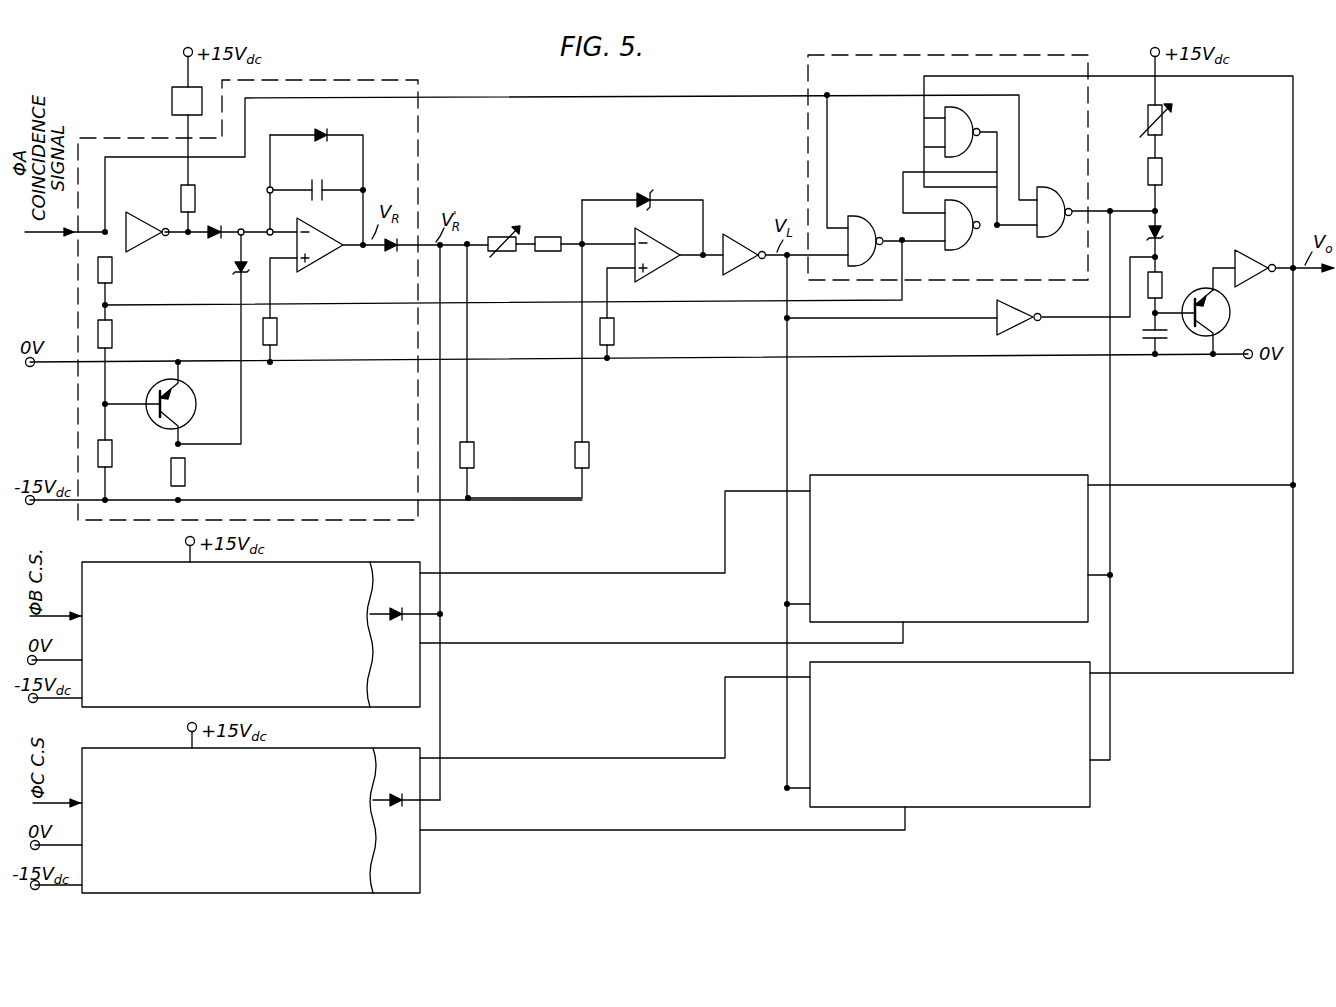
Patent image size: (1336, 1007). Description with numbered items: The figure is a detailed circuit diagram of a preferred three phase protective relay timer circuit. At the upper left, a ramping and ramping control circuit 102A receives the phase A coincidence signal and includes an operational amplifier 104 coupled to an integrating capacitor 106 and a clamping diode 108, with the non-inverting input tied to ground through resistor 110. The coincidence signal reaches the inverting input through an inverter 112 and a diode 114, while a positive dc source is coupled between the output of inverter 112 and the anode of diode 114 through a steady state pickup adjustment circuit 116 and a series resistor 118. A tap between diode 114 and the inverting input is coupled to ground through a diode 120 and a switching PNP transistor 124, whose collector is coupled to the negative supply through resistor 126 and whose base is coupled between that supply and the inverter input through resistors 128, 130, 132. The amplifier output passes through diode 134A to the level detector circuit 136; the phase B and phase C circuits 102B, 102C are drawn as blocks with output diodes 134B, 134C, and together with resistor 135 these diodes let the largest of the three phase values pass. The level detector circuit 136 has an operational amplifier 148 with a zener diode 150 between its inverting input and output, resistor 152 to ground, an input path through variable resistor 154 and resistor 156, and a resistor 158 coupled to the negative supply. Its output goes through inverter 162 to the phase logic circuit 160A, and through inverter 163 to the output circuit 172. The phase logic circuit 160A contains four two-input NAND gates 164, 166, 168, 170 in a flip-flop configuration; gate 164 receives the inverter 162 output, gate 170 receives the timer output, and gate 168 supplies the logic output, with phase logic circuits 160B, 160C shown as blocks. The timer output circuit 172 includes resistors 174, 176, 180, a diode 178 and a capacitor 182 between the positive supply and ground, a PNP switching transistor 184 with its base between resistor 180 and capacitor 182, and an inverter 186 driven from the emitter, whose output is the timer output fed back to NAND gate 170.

The ramping and ramping control circuit 102A is at (352, 442).
The phase B circuit 102B is at (268, 650).
The phase C circuit 102C is at (263, 833).
The operational amplifier 104 is at (320, 234).
The integrating capacitor 106 is at (316, 178).
The clamping diode 108 is at (314, 130).
The resistor 110 is at (279, 332).
The inverter 112 is at (146, 215).
The diode 114 is at (213, 242).
The steady state pickup adjustment circuit 116 is at (172, 101).
The resistor 118 is at (197, 198).
The diode 120 is at (236, 278).
The switching PNP transistor 124 is at (191, 395).
The resistor 126 is at (186, 472).
The resistor 128 is at (113, 455).
The resistor 130 is at (113, 326).
The resistor 132 is at (113, 268).
The output diode 134A is at (390, 256).
The output diode 134B is at (396, 622).
The output diode 134C is at (396, 810).
The resistor 135 is at (475, 455).
The level detector circuit 136 is at (636, 155).
The operational amplifier 148 is at (660, 270).
The zener diode 150 is at (656, 194).
The resistor 152 is at (615, 331).
The variable resistor 154 is at (503, 252).
The resistor 156 is at (549, 236).
The resistor 158 is at (590, 455).
The phase logic circuit 160A is at (895, 147).
The phase logic circuit 160B is at (980, 553).
The phase logic circuit 160C is at (980, 748).
The inverter 162 is at (742, 265).
The inverter 163 is at (1023, 327).
The NAND gate 164 is at (862, 218).
The NAND gate 166 is at (965, 242).
The NAND gate 168 is at (1058, 188).
The NAND gate 170 is at (968, 120).
The timer output circuit 172 is at (1252, 197).
The resistor 174 is at (1147, 112).
The resistor 176 is at (1147, 170).
The diode 178 is at (1165, 236).
The resistor 180 is at (1163, 286).
The capacitor 182 is at (1167, 339).
The PNP switching transistor 184 is at (1232, 312).
The inverter 186 is at (1252, 256).